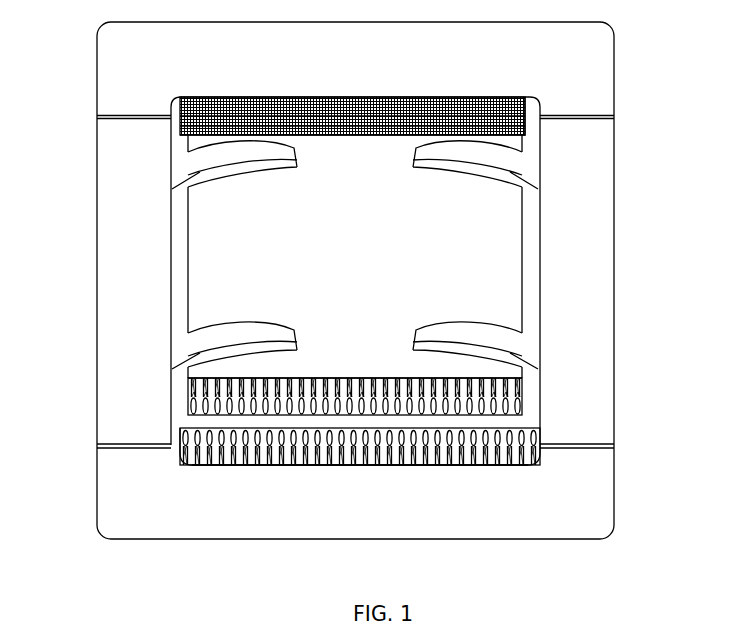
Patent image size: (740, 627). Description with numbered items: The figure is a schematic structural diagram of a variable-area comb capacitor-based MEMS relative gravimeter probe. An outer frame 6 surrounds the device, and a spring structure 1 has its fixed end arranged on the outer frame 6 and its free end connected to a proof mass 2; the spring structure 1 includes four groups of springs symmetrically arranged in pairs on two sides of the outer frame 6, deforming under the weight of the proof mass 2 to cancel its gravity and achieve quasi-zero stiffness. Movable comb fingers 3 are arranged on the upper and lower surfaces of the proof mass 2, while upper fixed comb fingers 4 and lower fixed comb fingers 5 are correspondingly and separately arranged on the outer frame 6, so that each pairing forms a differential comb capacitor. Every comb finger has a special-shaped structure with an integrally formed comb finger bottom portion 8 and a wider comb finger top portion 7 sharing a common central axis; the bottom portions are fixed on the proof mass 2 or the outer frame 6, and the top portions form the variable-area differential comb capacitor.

The spring structure 1 is at (210, 164).
The proof mass 2 is at (207, 232).
The movable comb finger 3 is at (190, 103).
The upper fixed comb finger 4 is at (184, 125).
The lower fixed comb finger 5 is at (530, 435).
The outer frame 6 is at (140, 283).
The comb finger top portion 7 is at (492, 118).
The comb finger bottom portion 8 is at (500, 129).